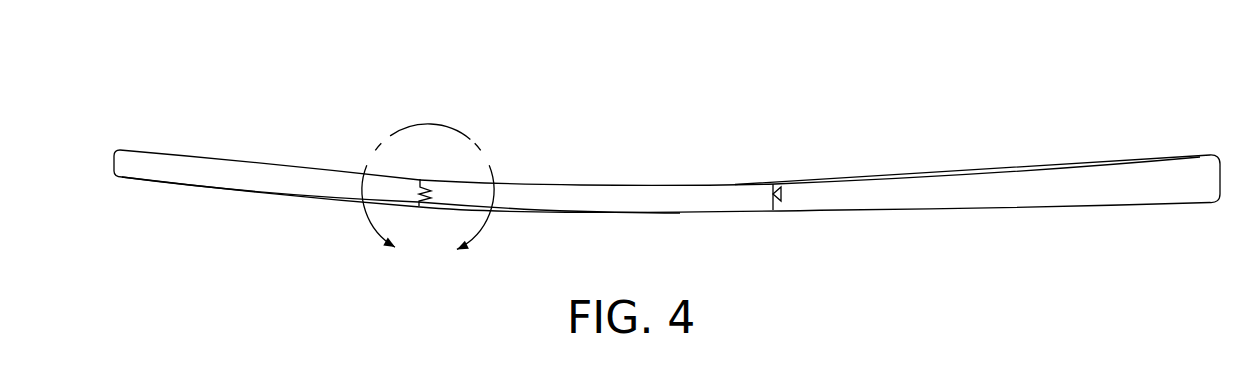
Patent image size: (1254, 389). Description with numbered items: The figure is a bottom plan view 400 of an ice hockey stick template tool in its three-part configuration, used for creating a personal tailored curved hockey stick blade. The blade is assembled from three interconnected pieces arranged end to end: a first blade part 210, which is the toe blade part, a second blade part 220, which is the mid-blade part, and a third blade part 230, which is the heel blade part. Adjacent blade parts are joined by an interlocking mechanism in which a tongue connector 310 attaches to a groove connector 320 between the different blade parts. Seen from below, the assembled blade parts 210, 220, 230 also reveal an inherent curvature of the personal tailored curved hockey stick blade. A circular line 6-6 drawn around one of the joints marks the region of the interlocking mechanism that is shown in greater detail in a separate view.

The bottom plan view 400 is at (667, 161).
The first blade part 210 is at (189, 162).
The second blade part 220 is at (612, 197).
The third blade part 230 is at (948, 185).
The tongue connector 310 is at (431, 190).
The groove connector 320 is at (775, 194).
The circular line 6- 6 is at (425, 189).